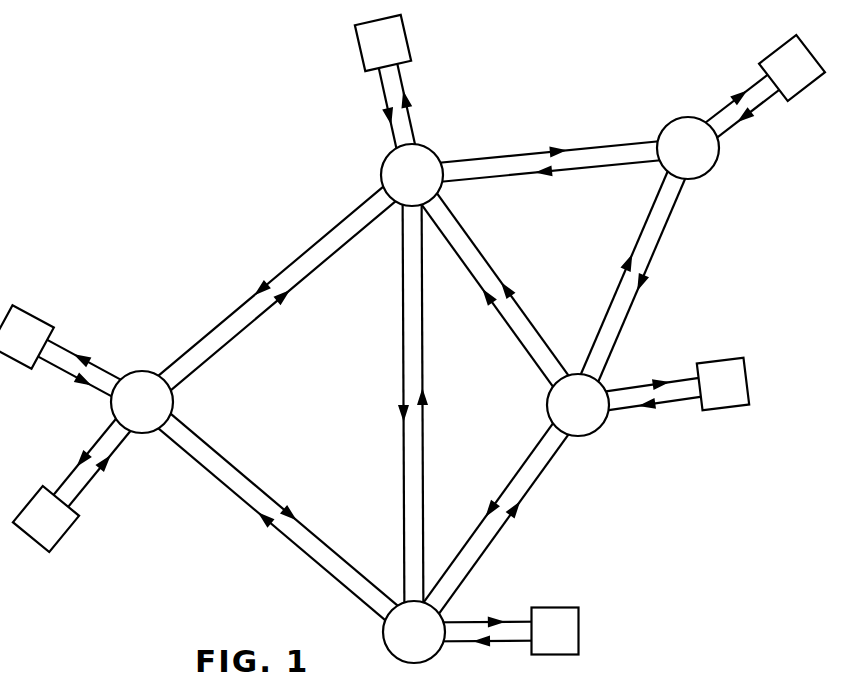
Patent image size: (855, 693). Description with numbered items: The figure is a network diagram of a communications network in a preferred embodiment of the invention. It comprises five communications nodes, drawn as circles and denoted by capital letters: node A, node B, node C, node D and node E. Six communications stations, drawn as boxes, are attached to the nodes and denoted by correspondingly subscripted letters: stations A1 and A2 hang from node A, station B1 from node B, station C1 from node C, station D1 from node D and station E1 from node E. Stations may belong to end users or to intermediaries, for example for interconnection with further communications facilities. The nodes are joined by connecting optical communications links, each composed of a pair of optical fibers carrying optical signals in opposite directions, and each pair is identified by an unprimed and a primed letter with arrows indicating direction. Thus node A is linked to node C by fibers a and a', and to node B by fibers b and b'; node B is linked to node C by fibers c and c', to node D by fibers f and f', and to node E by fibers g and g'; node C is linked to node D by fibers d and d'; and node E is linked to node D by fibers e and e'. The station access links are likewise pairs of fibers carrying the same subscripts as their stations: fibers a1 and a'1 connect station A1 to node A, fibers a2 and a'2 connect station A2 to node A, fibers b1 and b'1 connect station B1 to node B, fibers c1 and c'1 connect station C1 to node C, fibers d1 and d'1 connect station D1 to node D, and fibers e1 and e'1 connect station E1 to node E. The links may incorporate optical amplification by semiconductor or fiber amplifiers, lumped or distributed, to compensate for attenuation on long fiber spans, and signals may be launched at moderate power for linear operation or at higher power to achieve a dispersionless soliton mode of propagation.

The communications node A is at (142, 402).
The communications node B is at (412, 175).
The communications node C is at (414, 632).
The communications node D is at (578, 405).
The communications node E is at (688, 148).
The communications station A1 is at (27, 337).
The communications station A2 is at (46, 519).
The communications station B1 is at (383, 43).
The communications station C1 is at (555, 631).
The communications station D1 is at (723, 384).
The communications station E1 is at (792, 68).
The optical fiber a is at (284, 510).
The optical fiber a' is at (272, 524).
The optical fiber b is at (271, 281).
The optical fiber b' is at (283, 295).
The optical fiber c is at (431, 403).
The optical fiber c' is at (388, 403).
The optical fiber d is at (488, 512).
The optical fiber d' is at (504, 524).
The optical fiber e is at (642, 280).
The optical fiber e' is at (624, 272).
The optical fiber f is at (503, 284).
The optical fiber f' is at (487, 296).
The optical fiber g is at (549, 142).
The optical fiber g' is at (551, 181).
The station access link fiber a1 is at (87, 360).
The station access link fiber a'1 is at (78, 378).
The station access link fiber a2 is at (87, 454).
The station access link fiber a'2 is at (101, 466).
The station access link fiber b1 is at (418, 107).
The station access link fiber b'1 is at (376, 111).
The station access link fiber c1 is at (484, 607).
The station access link fiber c'1 is at (484, 660).
The station access link fiber d1 is at (649, 368).
The station access link fiber d'1 is at (651, 418).
The station access link fiber e1 is at (734, 101).
The station access link fiber e'1 is at (746, 116).